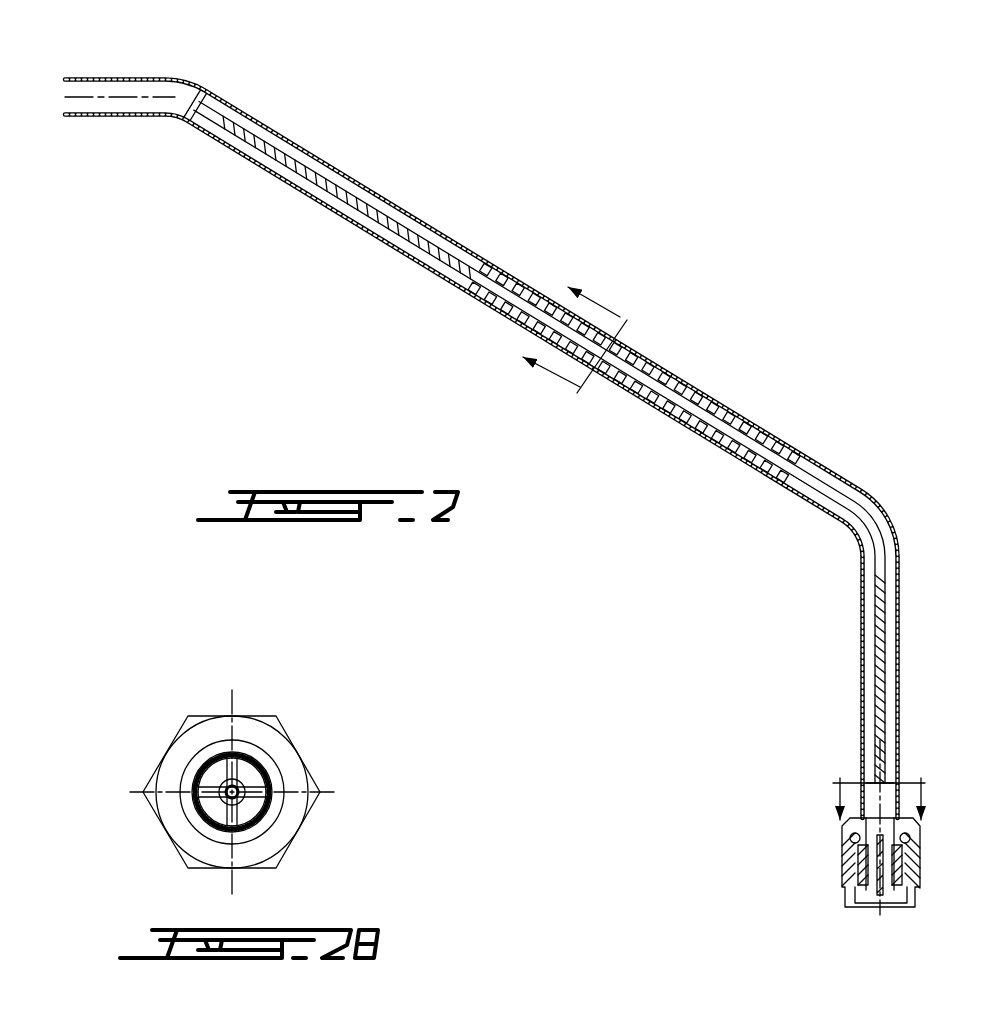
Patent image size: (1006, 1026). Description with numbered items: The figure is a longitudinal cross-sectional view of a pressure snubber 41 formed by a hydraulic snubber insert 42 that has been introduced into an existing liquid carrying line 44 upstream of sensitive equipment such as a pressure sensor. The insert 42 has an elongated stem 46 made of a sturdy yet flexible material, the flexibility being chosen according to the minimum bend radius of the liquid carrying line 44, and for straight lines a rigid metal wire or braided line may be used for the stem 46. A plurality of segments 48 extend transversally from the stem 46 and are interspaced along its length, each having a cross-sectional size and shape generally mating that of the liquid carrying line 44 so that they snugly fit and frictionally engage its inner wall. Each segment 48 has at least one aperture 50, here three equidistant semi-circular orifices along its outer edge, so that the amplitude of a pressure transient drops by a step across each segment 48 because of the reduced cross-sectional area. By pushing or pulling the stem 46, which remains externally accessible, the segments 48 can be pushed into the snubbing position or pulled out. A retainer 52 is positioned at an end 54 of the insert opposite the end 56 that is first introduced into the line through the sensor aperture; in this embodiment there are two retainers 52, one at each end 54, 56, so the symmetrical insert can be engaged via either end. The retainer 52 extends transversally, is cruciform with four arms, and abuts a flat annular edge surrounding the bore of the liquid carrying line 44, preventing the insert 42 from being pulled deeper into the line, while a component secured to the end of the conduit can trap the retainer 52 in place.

In FIG. 2, the pressure snubber 41 is at (847, 400).
In FIG. 2, the hydraulic snubber insert 42 is at (412, 230).
In FIG. 2, the liquid carrying line 44 is at (653, 362).
In FIG. 2, the elongated stem 46 is at (430, 256).
In FIG. 2, the segment 48 is at (488, 265).
In FIG. 2, the aperture 50 is at (472, 295).
In FIG. 2, the retainer 52 is at (882, 788).
In FIG. 2B, the retainer 52 is at (252, 797).
In FIG. 2, the end of the insert 54 is at (878, 786).
In FIG. 2, the end of the insert 56 is at (190, 120).